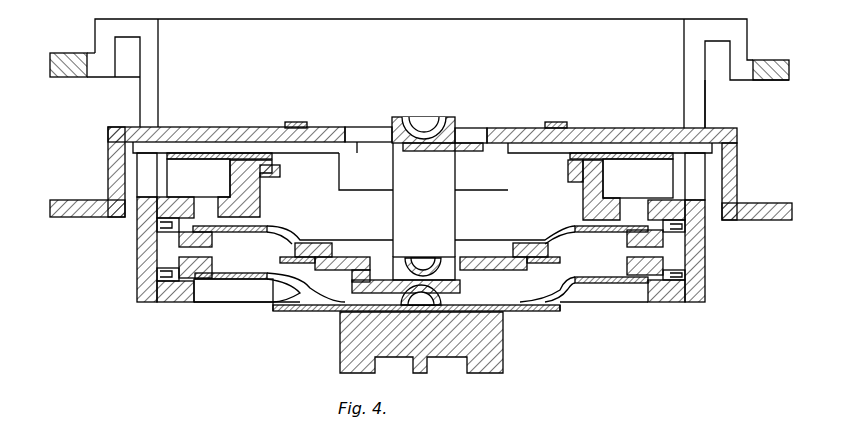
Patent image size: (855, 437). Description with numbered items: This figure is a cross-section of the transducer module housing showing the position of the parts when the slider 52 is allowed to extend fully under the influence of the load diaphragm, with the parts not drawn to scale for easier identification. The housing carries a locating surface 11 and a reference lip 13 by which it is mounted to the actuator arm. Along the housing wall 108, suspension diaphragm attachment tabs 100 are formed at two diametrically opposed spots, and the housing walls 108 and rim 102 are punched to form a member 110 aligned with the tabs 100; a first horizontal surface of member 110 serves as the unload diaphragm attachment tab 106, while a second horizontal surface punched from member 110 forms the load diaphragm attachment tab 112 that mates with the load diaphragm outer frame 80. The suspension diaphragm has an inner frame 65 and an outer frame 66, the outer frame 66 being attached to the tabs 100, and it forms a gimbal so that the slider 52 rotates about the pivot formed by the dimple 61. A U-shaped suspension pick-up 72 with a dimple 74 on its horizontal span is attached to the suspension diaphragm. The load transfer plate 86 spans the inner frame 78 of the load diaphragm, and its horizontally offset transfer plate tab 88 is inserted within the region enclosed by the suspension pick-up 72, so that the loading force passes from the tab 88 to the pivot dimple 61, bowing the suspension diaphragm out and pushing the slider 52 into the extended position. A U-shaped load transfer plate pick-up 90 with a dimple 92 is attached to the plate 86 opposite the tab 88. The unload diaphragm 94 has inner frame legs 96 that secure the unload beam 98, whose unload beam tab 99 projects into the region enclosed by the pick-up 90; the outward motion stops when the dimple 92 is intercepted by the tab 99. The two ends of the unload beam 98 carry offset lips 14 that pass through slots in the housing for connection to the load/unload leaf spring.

The housing locating surface 11 is at (749, 37).
The housing reference lip 13 is at (780, 80).
The offset lips 14 is at (93, 200).
The slider 52 is at (500, 338).
The dimple 61 is at (424, 295).
The inner frame 65 is at (300, 300).
The outer frame 66 is at (247, 284).
The suspension pick-up 72 is at (445, 257).
The dimple 74 is at (415, 258).
The inner frame 78 is at (305, 245).
The load diaphragm outer frame 80 is at (287, 240).
The load transfer plate 86 is at (493, 257).
The transfer plate tab 88 is at (390, 286).
The load transfer plate pick-up 90 is at (442, 203).
The dimple 92 is at (422, 128).
The unload diaphragm 94 is at (207, 160).
The legs 96 is at (297, 122).
The unload beam 98 is at (612, 130).
The unload beam tab 99 is at (428, 150).
The suspension diaphragm attachment tabs 100 is at (210, 268).
The rim 102 is at (143, 282).
The unload diaphragm attachment tabs 106 is at (270, 176).
The housing wall 108 is at (147, 99).
The member 110 is at (231, 205).
The load diaphragm attachment tabs 112 is at (187, 238).